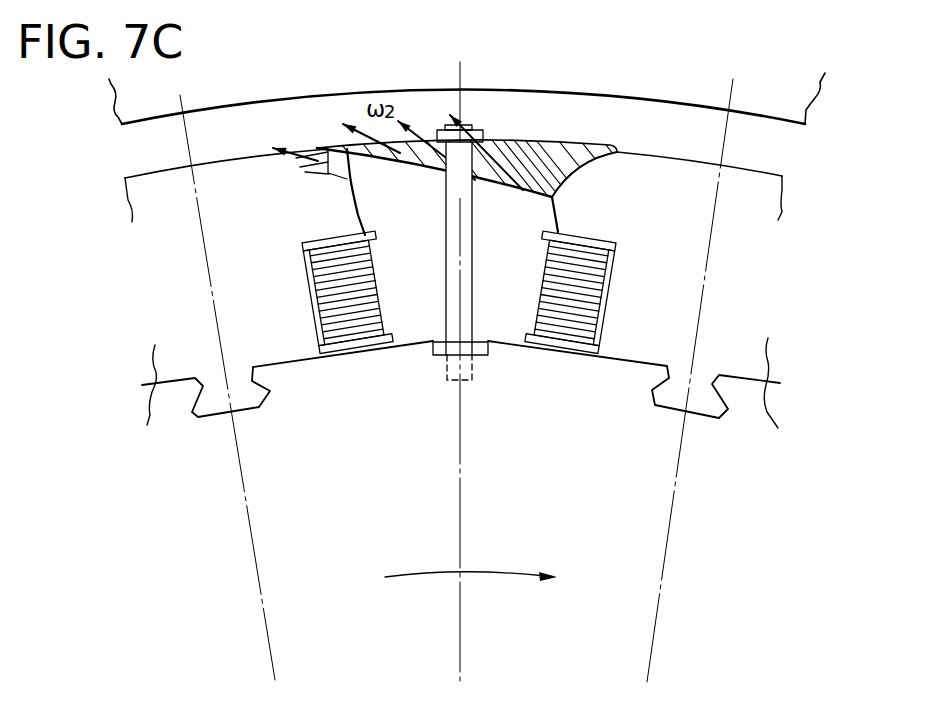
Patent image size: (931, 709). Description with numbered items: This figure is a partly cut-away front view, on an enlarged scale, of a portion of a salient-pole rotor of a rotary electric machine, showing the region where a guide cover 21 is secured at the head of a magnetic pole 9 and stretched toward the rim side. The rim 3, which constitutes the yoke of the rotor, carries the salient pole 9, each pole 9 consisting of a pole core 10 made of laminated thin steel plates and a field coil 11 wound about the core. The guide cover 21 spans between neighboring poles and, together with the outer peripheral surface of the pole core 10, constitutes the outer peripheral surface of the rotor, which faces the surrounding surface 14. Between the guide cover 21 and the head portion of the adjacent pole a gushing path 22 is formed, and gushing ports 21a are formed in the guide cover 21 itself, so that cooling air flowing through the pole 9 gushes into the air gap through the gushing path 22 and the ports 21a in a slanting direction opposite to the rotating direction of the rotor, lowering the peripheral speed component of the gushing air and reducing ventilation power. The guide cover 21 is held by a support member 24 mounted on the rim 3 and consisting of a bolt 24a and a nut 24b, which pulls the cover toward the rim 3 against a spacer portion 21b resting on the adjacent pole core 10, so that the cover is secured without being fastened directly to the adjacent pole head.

The rim 3 is at (777, 395).
The salient pole 9 is at (782, 178).
The pole core 10 is at (662, 157).
The field coil 11 is at (543, 297).
The outer rim / stator surface 14 is at (813, 98).
The guide cover 21 is at (573, 151).
The gushing ports 21a is at (514, 167).
The pole shoe portion 21b is at (348, 178).
The gushing path 22 is at (316, 149).
The support member 24 is at (473, 223).
The bolt 24a is at (448, 129).
The nut 24b is at (479, 129).